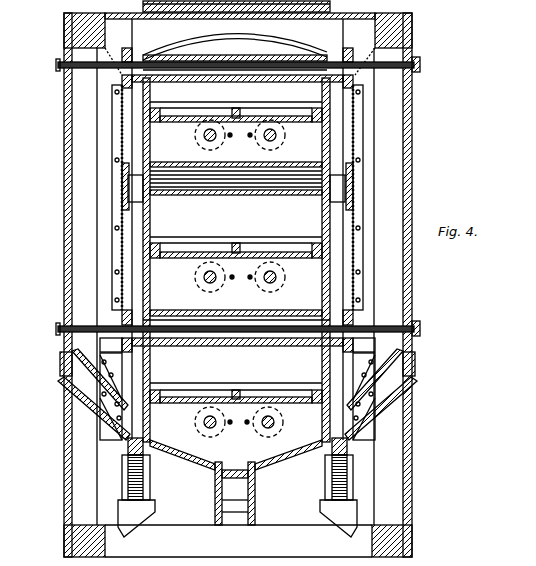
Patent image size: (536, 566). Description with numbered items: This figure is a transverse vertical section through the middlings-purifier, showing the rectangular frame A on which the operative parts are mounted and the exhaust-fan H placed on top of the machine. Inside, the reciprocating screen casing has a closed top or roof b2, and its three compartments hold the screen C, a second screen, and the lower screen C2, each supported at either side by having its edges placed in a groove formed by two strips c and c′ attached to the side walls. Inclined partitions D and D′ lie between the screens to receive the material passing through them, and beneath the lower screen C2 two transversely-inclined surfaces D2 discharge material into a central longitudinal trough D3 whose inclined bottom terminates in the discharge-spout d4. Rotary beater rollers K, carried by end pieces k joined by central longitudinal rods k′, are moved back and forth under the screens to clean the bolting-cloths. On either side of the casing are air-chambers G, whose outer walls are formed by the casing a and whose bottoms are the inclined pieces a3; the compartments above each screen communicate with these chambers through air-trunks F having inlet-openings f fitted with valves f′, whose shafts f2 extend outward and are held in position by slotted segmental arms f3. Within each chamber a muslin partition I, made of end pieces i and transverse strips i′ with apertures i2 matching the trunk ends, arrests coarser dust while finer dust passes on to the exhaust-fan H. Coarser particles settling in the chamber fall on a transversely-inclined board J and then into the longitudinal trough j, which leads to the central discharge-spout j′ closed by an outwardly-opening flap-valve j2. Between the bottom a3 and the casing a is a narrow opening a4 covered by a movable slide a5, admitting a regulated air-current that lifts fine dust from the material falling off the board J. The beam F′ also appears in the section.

The rectangular frame A is at (231, 285).
The exhaust-fan H is at (221, 6).
The casing a is at (239, 272).
The closed top or roof b2 is at (205, 43).
The inlet-openings f is at (268, 326).
The valves f′ is at (218, 58).
The valve shafts f2 is at (300, 55).
The slotted segmental arms f3 is at (421, 330).
The air-trunks F is at (210, 82).
The beam bracket F′ is at (250, 346).
The end pieces i is at (382, 172).
The transverse strips i′ is at (112, 318).
The apertures i2 is at (122, 74).
The partition I is at (232, 199).
The air-chambers G is at (237, 198).
The screen C is at (258, 110).
The lower screen C2 is at (236, 386).
The strip c is at (240, 231).
The strip c′ is at (239, 270).
The rollers K is at (280, 142).
The end pieces k is at (204, 138).
The central longitudinal rods k′ is at (239, 286).
The inclined partition D is at (236, 178).
The inclined partition D′ is at (236, 305).
The transversely-inclined surfaces D2 is at (236, 455).
The central longitudinal trough D3 is at (235, 487).
The movable slide a5 is at (436, 354).
The discharge-spout d4 is at (235, 518).
The inclined bottom pieces a3 is at (92, 405).
The narrow opening a4 is at (68, 380).
The transversely-inclined board J is at (232, 396).
The longitudinal trough or conveyer j is at (145, 452).
The central discharge-spout j′ is at (237, 518).
The flap-valve j2 is at (118, 512).